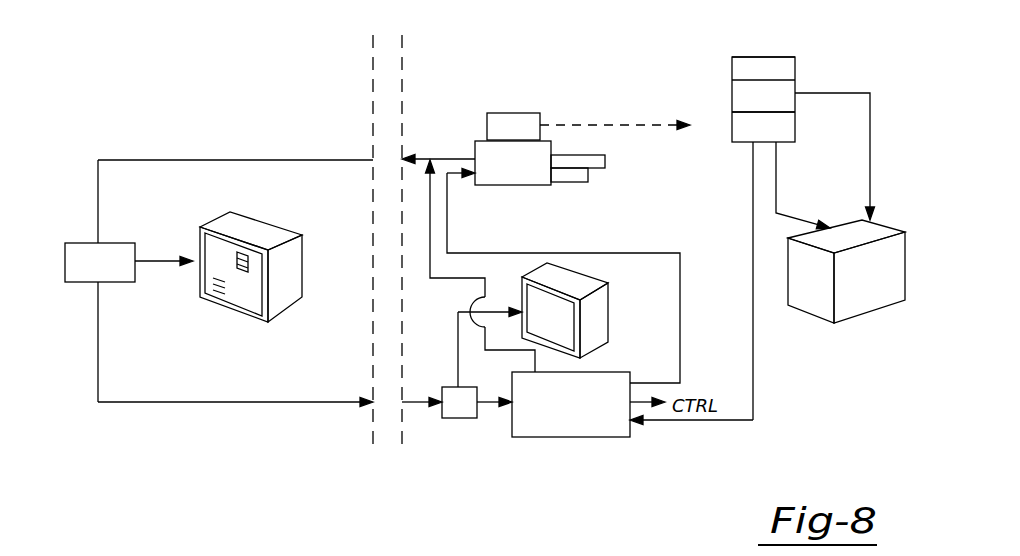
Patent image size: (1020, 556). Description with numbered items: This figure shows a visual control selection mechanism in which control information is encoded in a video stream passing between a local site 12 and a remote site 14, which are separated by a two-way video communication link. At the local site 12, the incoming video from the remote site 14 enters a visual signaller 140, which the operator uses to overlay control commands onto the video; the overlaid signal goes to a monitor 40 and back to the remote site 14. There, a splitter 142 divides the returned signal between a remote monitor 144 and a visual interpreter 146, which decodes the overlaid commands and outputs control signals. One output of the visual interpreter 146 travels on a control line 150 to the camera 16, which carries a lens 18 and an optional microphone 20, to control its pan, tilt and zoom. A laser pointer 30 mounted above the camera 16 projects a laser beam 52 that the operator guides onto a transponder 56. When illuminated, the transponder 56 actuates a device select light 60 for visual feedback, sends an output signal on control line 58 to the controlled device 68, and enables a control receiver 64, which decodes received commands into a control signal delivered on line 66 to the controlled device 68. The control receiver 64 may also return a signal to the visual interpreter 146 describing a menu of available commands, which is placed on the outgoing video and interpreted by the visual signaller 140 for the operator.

The local site 12 is at (289, 116).
The remote site 14 is at (560, 71).
The camera 16 is at (507, 175).
The lens 18 is at (585, 156).
The microphone 20 is at (570, 178).
The laser pointer 30 is at (521, 118).
The monitor 40 is at (230, 297).
The laser beam 52 is at (623, 124).
The transponder 56 is at (735, 97).
The control line 58 is at (870, 153).
The device select light 60 is at (771, 59).
The control receiver 64 is at (783, 123).
The line 66 is at (777, 176).
The controlled device 68 is at (865, 304).
The visual signaller 140 is at (65, 258).
The splitter 142 is at (463, 413).
The remote monitor 144 is at (603, 313).
The visual interpreter 146 is at (597, 430).
The control line 150 is at (630, 253).